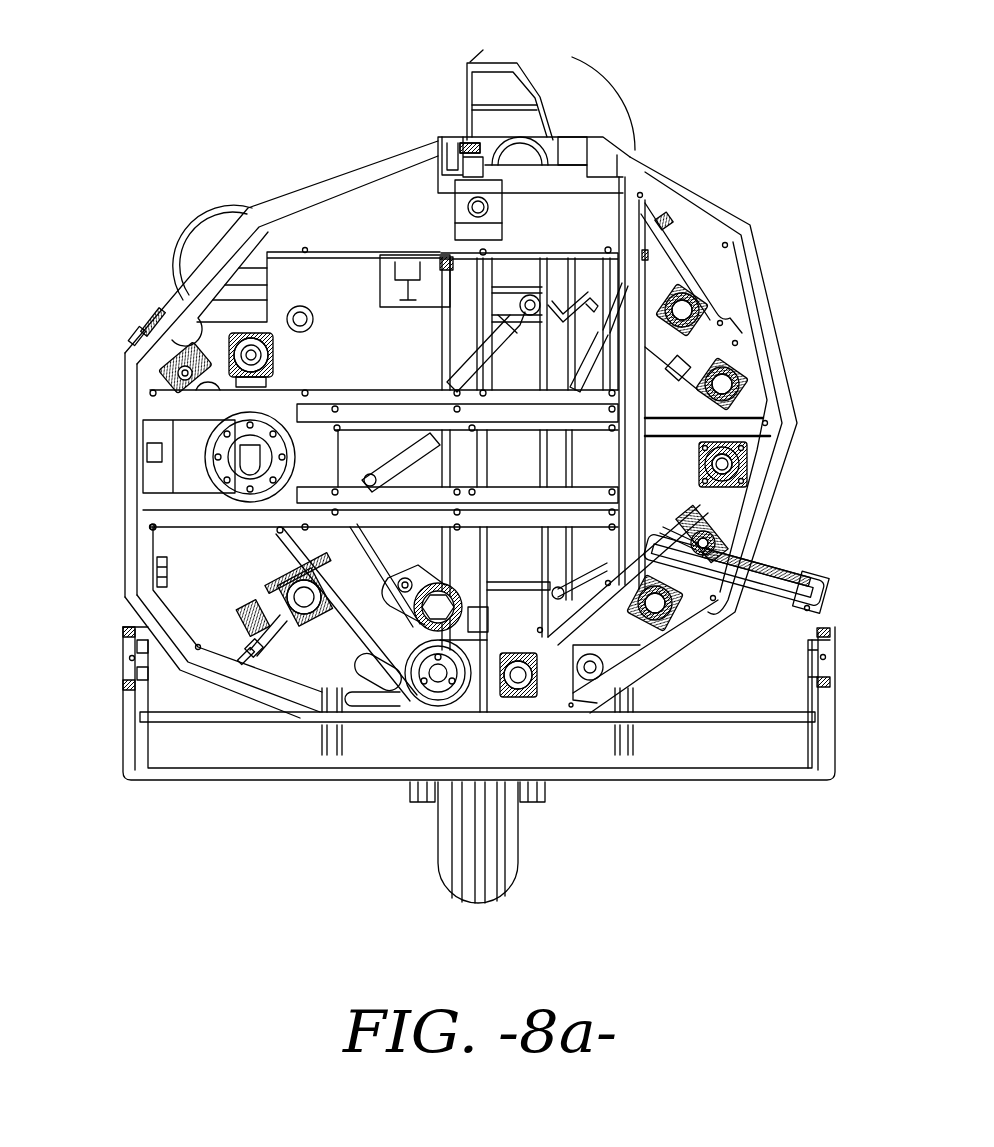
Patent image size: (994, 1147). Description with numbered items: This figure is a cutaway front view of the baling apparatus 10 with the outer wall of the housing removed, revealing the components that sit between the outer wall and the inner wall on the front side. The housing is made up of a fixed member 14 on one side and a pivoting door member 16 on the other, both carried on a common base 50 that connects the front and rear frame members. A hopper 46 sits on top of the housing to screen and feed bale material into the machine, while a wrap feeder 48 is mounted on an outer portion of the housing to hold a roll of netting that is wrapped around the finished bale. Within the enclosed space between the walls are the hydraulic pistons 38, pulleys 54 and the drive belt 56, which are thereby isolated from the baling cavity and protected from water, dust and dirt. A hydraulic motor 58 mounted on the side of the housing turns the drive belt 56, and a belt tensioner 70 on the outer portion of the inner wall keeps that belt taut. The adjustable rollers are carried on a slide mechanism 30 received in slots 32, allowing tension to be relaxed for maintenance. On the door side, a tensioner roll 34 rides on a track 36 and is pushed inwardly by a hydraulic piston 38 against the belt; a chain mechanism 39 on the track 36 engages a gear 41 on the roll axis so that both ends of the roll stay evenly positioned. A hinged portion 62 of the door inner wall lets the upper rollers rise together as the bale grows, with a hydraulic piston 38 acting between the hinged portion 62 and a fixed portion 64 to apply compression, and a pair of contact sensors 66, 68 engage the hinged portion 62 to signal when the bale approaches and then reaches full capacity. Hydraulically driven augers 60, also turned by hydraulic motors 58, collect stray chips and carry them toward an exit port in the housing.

The baling apparatus 10 is at (158, 135).
The fixed member 14 is at (377, 203).
The pivoting door member 16 is at (697, 247).
The slide mechanism 30 is at (313, 617).
The slots 32 is at (273, 617).
The tensioner roll 34 is at (723, 517).
The track 36 is at (812, 563).
The hydraulic piston 38 is at (470, 367).
The chain mechanism 39 is at (830, 587).
The gear 41 is at (712, 540).
The hopper 46 is at (568, 80).
The wrap feeder 48 is at (187, 237).
The base 50 is at (687, 747).
The pulleys 54 is at (410, 697).
The drive belt 56 is at (273, 383).
The hydraulic motor 58 is at (215, 445).
The augers 60 is at (302, 316).
The hinged portion 62 is at (713, 287).
The fixed portion 64 is at (593, 470).
The contact sensor 66 is at (607, 327).
The contact sensor 68 is at (665, 222).
The belt tensioner 70 is at (218, 385).